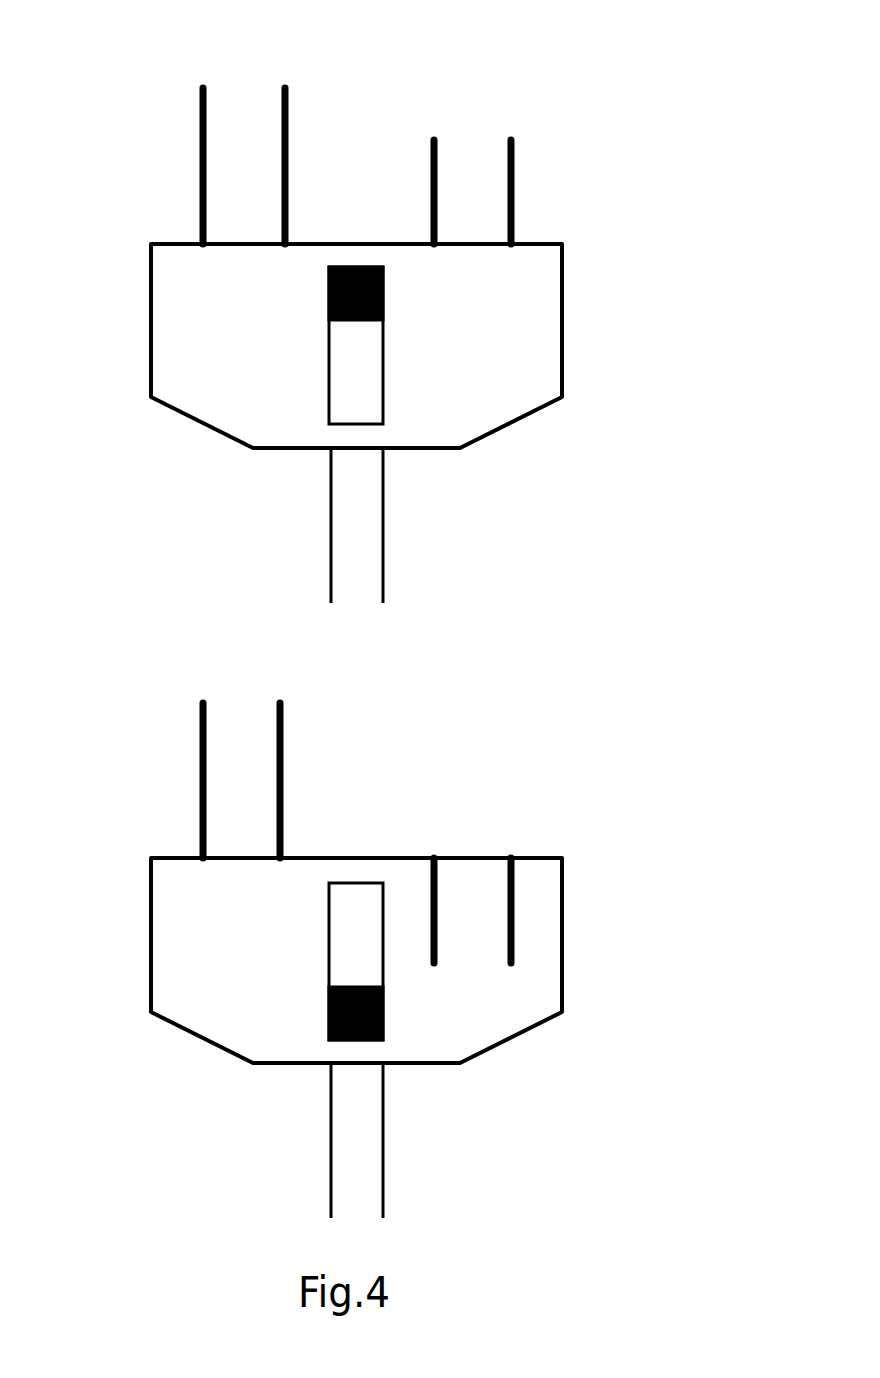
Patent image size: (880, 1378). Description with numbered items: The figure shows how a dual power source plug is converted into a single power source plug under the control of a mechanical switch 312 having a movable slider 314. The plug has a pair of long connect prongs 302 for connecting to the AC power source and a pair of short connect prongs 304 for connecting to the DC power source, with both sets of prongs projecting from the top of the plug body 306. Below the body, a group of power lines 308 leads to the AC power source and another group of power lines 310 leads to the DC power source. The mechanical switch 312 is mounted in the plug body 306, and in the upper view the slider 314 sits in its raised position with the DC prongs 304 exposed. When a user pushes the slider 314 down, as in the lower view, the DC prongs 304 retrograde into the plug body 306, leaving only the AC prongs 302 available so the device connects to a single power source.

The long connect prongs 302 is at (203, 167).
The short connect prongs 304 is at (513, 177).
The plug body 306 is at (562, 293).
The power lines 308 is at (331, 566).
The power lines 310 is at (382, 576).
The mechanical switch 312 is at (383, 346).
The slider 314 is at (329, 291).